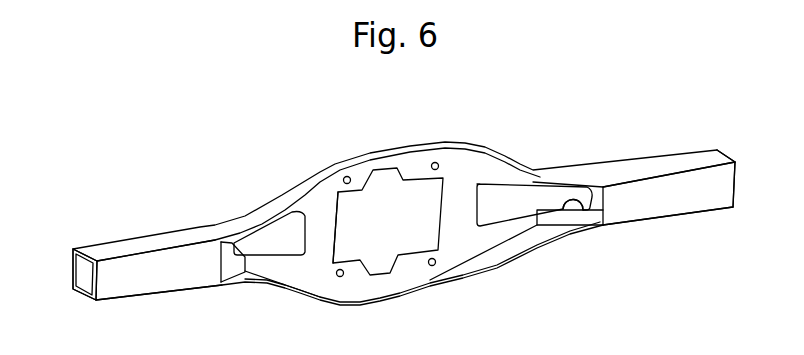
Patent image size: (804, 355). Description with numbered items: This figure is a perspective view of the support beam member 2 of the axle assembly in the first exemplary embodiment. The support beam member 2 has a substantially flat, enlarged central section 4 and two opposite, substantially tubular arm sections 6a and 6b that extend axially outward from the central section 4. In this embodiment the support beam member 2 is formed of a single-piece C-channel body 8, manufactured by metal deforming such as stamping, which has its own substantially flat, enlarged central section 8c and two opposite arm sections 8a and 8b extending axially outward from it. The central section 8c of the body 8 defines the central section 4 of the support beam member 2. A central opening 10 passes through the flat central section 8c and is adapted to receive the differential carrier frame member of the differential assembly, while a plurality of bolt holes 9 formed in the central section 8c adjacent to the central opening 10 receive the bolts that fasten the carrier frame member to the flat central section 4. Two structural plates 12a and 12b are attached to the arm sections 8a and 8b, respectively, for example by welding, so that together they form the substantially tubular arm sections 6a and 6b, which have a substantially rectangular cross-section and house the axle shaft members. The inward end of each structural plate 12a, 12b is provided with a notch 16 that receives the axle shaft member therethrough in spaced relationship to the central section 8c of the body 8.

The support beam member 2 is at (514, 137).
The central section 4 is at (384, 148).
The tubular arm section 6a is at (662, 158).
The tubular arm section 6b is at (122, 243).
The C-channel body 8 is at (496, 270).
The arm section 8a is at (698, 150).
The arm section 8b is at (83, 277).
The central section 8c is at (406, 274).
The bolt holes 9 is at (347, 176).
The central opening 10 is at (443, 210).
The structural plate 12a is at (688, 203).
The structural plate 12b is at (148, 282).
The notch 16 is at (578, 211).